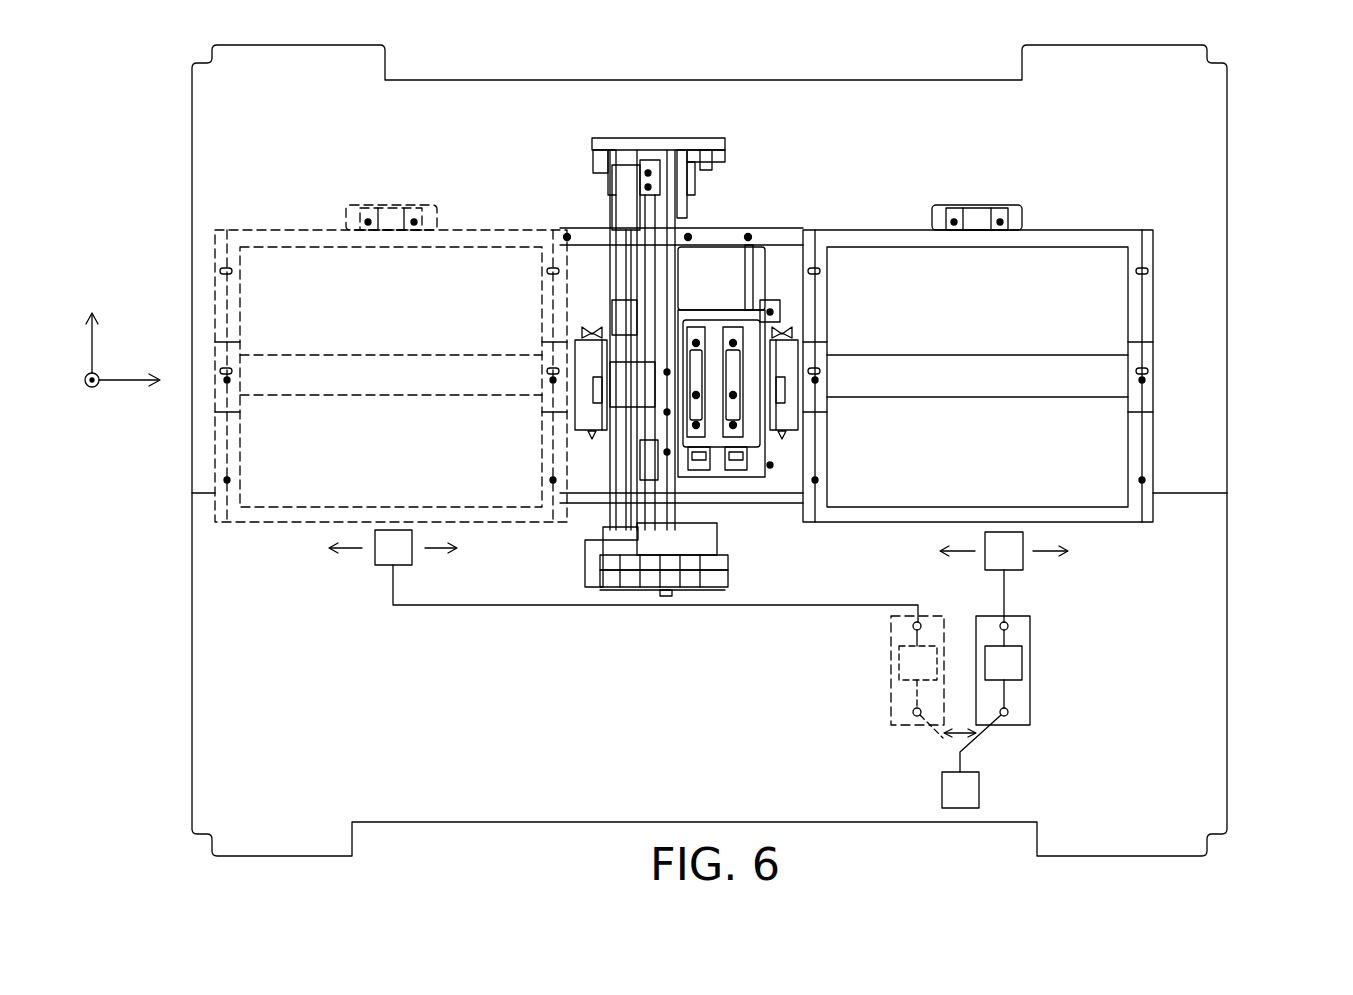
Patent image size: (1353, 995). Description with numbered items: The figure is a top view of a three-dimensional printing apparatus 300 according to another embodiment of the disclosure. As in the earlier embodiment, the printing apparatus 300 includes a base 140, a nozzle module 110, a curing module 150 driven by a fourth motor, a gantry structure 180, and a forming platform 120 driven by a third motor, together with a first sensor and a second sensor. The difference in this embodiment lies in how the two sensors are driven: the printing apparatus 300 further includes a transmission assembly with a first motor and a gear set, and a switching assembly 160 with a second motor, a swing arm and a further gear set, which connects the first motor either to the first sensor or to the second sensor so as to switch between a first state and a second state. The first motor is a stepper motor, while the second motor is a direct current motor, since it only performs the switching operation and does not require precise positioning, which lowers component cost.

The 3D printing apparatus 300 is at (1343, 852).
The base 140 is at (1210, 120).
The forming platform 120 is at (1076, 258).
The gantry structure 180 is at (660, 138).
The nozzle module 110 is at (717, 417).
The curing module 150 is at (590, 398).
The driving unit 160 is at (975, 744).